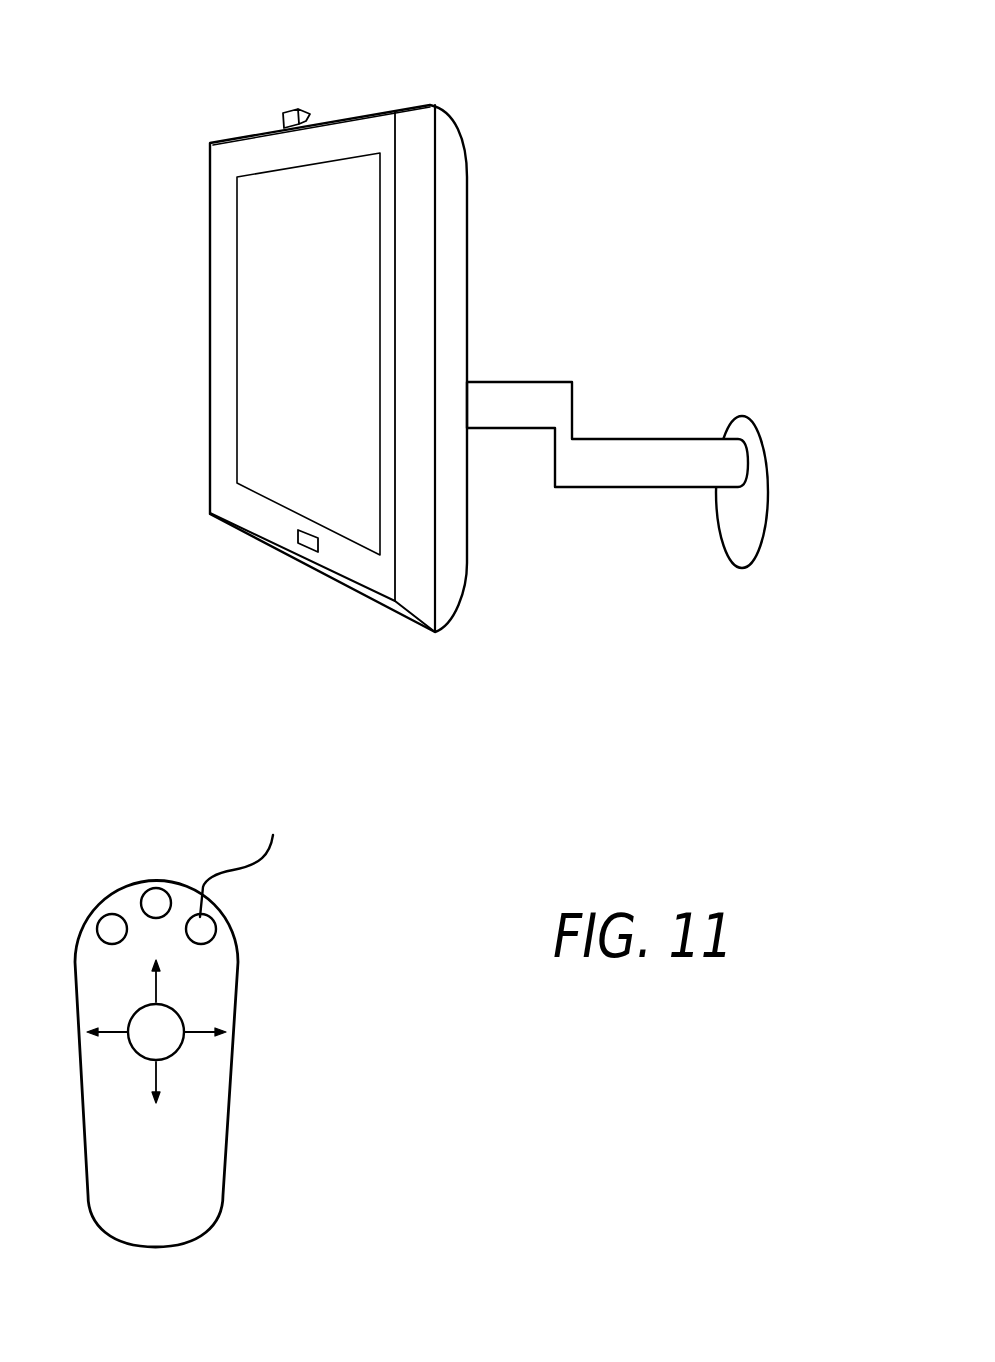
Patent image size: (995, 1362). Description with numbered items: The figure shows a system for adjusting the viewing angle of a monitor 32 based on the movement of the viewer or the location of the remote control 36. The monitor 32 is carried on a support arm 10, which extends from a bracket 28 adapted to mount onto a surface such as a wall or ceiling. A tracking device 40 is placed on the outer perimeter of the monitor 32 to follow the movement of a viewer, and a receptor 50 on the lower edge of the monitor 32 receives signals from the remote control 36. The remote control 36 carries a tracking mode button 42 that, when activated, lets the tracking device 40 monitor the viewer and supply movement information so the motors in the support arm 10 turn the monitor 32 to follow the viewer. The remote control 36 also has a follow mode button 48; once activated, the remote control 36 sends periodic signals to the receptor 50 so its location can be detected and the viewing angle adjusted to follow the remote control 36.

The support arm 10 is at (490, 368).
The bracket 28 is at (768, 493).
The monitor 32 is at (370, 600).
The remote control 36 is at (216, 1005).
The tracking device 40 is at (285, 108).
The tracking mode button 42 is at (157, 888).
The follow mode button 48 is at (112, 925).
The receptor 50 is at (303, 540).